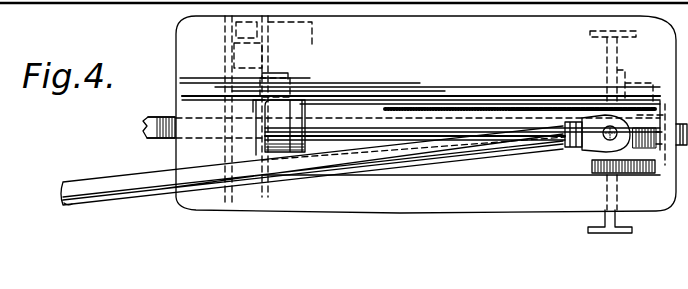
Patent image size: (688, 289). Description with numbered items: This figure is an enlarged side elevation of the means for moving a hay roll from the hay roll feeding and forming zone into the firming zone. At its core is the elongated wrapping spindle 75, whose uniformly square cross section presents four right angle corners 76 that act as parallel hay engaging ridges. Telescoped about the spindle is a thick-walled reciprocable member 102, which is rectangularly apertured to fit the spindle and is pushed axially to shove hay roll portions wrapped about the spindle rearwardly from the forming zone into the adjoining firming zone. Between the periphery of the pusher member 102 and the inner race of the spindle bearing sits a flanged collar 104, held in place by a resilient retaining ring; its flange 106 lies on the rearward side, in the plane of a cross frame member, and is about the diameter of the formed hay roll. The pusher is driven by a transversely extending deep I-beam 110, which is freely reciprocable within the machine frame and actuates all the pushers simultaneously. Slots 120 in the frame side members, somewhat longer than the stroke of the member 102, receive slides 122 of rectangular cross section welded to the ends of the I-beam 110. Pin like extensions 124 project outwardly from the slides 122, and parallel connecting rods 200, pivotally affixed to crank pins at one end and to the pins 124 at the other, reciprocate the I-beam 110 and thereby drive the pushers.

The wrapping spindle 75 is at (143, 128).
The right angle corners 76 is at (157, 111).
The reciprocable member 102 is at (378, 117).
The flanged collar 104 is at (316, 115).
The flange 106 is at (258, 91).
The I-beam 110 is at (632, 231).
The slots 120 is at (492, 106).
The slides 122 is at (636, 130).
The pin like extensions 124 is at (604, 138).
The connecting rods 200 is at (77, 182).